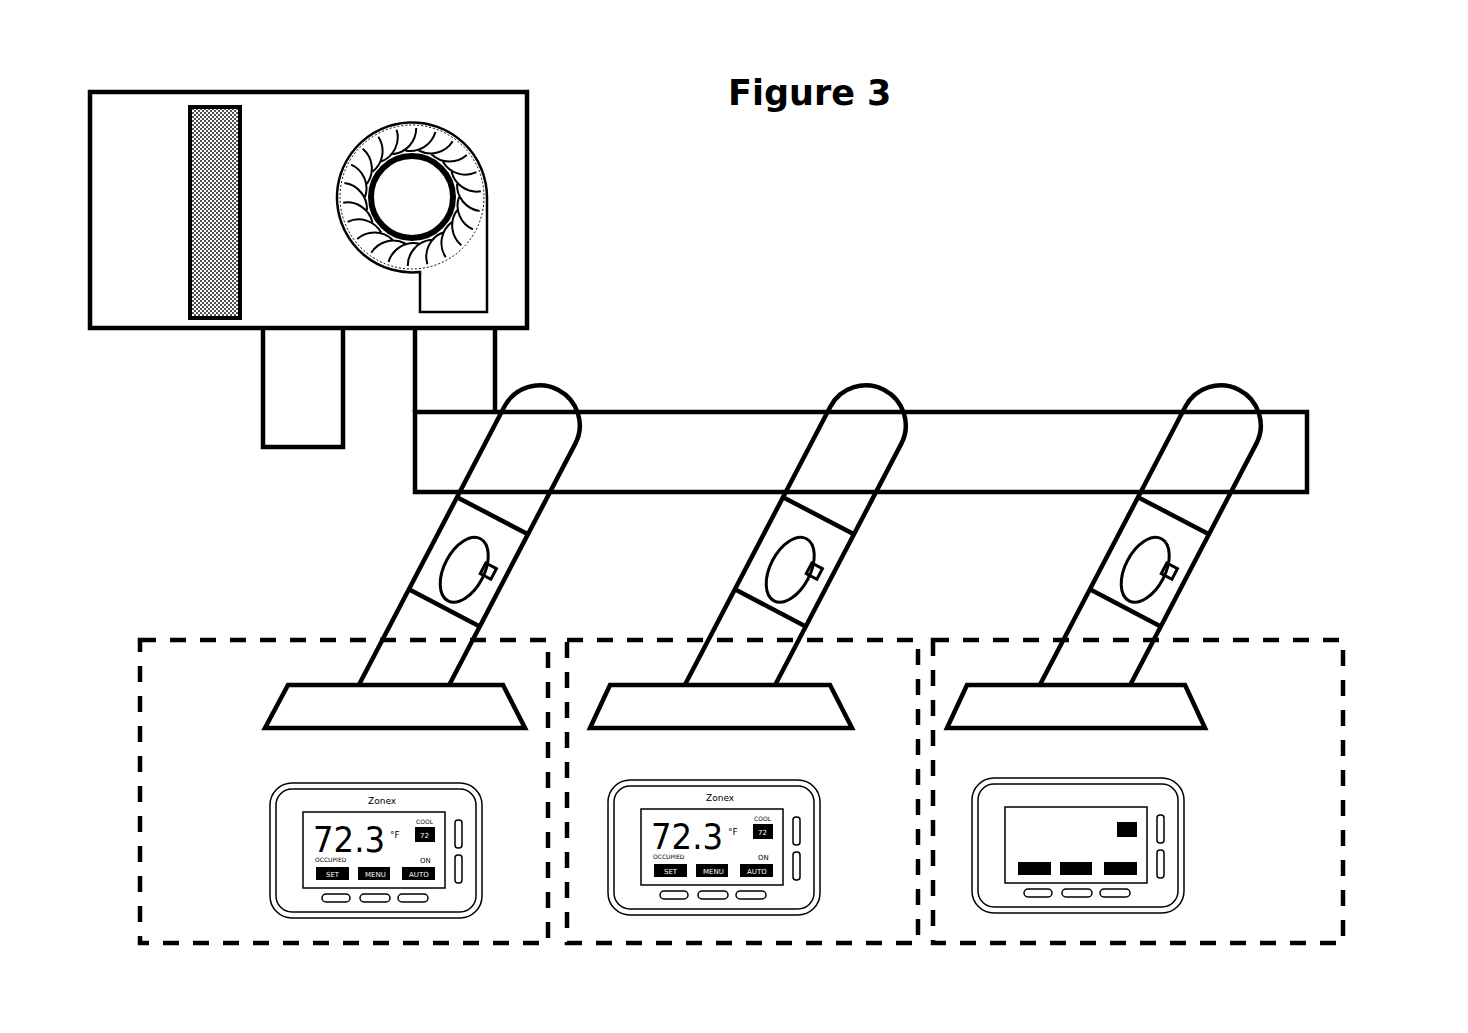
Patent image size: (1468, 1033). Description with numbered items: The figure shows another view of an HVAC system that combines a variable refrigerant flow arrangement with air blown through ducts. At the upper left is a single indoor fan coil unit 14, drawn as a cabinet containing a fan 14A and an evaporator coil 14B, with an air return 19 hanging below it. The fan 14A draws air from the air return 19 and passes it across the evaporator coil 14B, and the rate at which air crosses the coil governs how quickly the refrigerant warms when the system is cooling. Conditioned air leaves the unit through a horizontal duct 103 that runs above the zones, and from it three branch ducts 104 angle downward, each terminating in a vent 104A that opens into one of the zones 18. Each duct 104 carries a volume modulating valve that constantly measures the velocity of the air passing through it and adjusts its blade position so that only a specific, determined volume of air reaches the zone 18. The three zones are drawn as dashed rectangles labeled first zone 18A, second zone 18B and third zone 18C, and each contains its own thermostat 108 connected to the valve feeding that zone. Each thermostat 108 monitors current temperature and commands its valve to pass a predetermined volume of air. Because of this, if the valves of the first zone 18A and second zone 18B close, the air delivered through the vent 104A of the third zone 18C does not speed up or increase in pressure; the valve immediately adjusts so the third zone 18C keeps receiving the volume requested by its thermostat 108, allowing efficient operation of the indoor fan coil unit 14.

The indoor fan coil unit 14 is at (527, 125).
The fan 14A is at (487, 213).
The evaporator coil 14B is at (220, 137).
The air return 19 is at (263, 430).
The duct 103 is at (697, 423).
The duct 104 is at (1189, 546).
The vent 104A is at (303, 708).
The zone 18 is at (775, 743).
The first zone 18A is at (312, 640).
The second zone 18B is at (880, 643).
The third zone 18C is at (1322, 698).
The thermostat 108 is at (1175, 838).